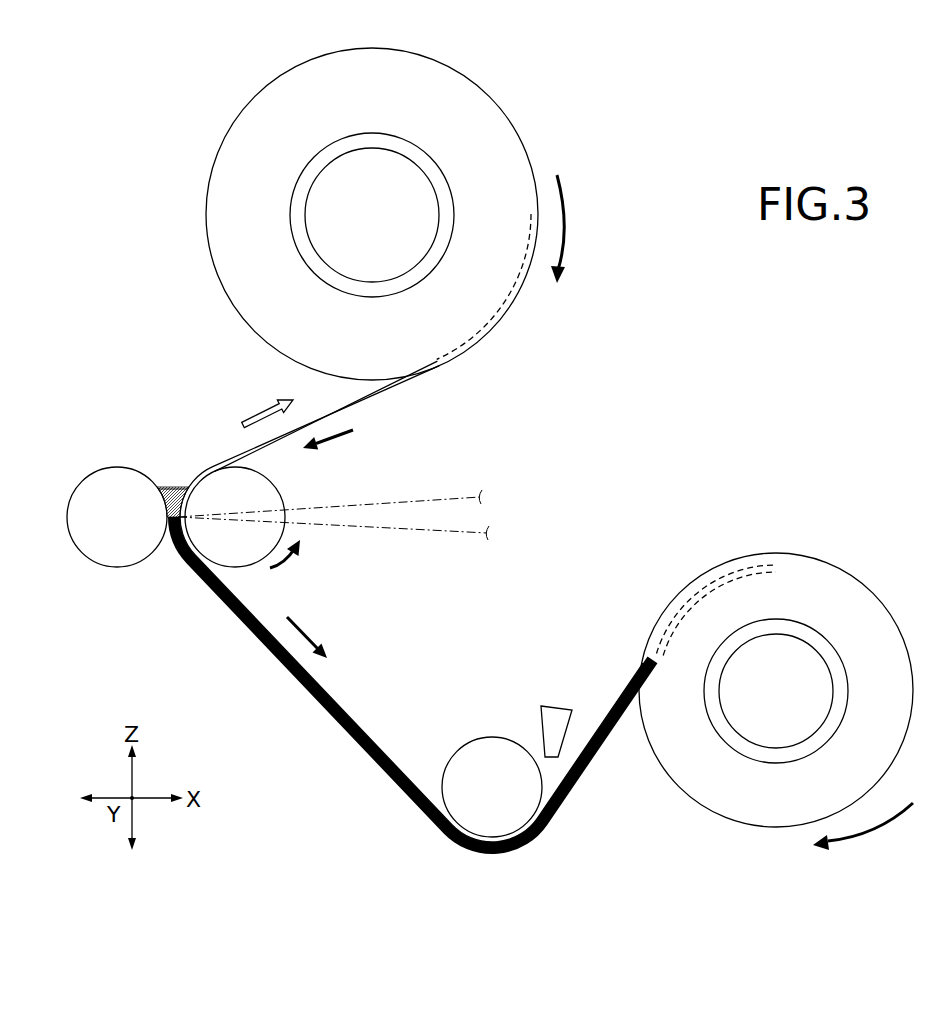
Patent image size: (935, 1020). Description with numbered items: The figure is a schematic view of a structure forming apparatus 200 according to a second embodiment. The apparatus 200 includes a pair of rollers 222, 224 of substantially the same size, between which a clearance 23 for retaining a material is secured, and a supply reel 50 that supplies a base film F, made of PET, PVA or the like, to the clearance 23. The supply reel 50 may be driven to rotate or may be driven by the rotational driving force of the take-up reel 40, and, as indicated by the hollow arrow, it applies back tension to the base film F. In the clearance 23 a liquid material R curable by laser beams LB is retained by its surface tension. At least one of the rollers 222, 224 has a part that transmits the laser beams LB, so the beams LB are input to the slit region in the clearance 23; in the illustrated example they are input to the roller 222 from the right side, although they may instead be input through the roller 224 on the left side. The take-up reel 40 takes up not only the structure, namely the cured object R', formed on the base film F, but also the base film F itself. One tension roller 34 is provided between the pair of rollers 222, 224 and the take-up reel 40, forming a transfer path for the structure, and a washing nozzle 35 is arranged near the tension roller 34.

The structure forming apparatus 200 is at (96, 142).
The supply reel 50 is at (417, 157).
The take-up reel 40 is at (803, 635).
The clearance 23 is at (167, 486).
The roller 222 is at (263, 493).
The roller 224 is at (118, 545).
The material R is at (179, 448).
The cured object R' is at (413, 682).
The base film F is at (370, 395).
The laser beams LB is at (387, 532).
The tension roller 34 is at (485, 747).
The washing nozzle 35 is at (553, 715).